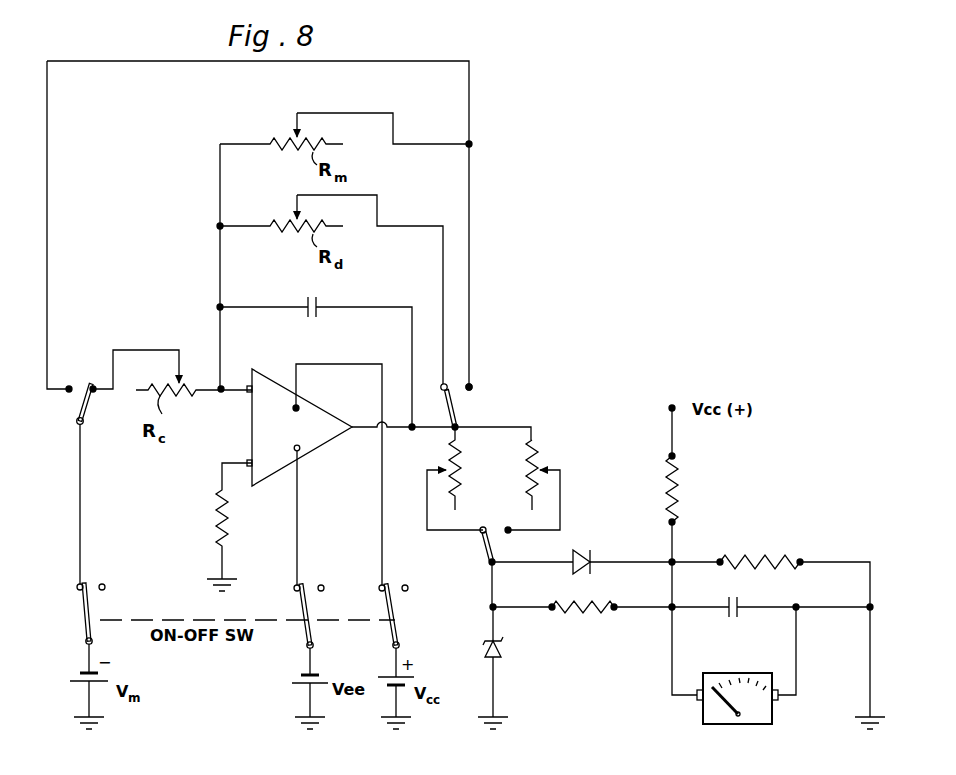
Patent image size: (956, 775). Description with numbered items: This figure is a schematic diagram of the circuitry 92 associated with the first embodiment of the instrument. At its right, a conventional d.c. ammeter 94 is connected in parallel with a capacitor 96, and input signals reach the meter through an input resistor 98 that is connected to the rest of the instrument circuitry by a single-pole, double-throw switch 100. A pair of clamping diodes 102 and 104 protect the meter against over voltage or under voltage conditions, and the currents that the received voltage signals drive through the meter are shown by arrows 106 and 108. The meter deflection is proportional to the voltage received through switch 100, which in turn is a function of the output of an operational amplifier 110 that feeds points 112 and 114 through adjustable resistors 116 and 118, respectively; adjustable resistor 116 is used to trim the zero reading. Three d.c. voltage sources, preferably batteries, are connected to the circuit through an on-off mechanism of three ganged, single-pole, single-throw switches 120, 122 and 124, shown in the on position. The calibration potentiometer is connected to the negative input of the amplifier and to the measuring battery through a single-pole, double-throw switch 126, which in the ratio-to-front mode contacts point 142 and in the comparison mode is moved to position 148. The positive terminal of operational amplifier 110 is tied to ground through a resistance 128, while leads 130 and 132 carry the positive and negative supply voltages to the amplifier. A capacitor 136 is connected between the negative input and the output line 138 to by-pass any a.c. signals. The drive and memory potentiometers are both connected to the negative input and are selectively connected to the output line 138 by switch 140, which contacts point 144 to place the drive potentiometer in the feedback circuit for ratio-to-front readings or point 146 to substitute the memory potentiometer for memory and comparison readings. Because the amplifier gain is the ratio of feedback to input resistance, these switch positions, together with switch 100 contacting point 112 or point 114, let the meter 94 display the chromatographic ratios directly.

The circuitry 92 is at (502, 204).
The d.c. ammeter 94 is at (718, 708).
The capacitor 96 is at (738, 612).
The input resistor 98 is at (573, 616).
The single-pole, double-throw switch 100 is at (487, 545).
The clamping diode 102 is at (503, 638).
The clamping diode 104 is at (592, 538).
The arrow 106 is at (662, 656).
The arrow 108 is at (836, 619).
The operational amplifier 110 is at (326, 432).
The point 112 is at (486, 527).
The point 114 is at (511, 536).
The adjustable resistor 116 is at (459, 450).
The adjustable resistor 118 is at (536, 449).
The single-pole, single-throw switch 120 is at (86, 613).
The single-pole, single-throw switch 122 is at (300, 601).
The single-pole, single-throw switch 124 is at (394, 612).
The single-pole, double-throw switch 126 is at (80, 409).
The resistance 128 is at (224, 508).
The lead 130 is at (340, 366).
The lead 132 is at (298, 513).
The capacitor 136 is at (320, 306).
The output line 138 is at (411, 429).
The switch 140 is at (458, 414).
The point 142 is at (96, 384).
The point 144 is at (447, 384).
The point 146 is at (471, 386).
The position 148 is at (66, 391).